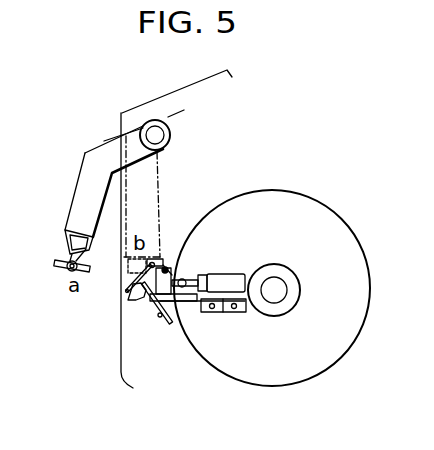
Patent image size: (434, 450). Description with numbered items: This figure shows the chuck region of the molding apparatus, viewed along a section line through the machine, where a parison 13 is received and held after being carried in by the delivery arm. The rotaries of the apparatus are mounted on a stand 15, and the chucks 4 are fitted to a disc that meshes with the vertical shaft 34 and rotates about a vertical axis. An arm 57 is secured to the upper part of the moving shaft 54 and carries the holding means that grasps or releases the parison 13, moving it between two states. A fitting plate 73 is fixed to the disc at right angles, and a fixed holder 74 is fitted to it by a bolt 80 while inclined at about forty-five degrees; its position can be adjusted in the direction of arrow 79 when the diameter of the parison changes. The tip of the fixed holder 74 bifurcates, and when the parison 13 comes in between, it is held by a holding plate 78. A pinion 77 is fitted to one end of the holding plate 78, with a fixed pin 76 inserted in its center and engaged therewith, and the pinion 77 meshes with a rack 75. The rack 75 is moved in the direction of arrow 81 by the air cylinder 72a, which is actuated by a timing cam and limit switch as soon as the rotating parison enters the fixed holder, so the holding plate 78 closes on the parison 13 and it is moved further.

The chuck 4 is at (230, 318).
The parison 13 is at (120, 313).
The stand 15 is at (166, 96).
The vertical shaft 34 is at (285, 289).
The moving shaft 54 is at (169, 135).
The arm 57 is at (76, 188).
The air cylinder 72a is at (238, 276).
The fitting plate 73 is at (237, 311).
The fixed holder 74 is at (131, 298).
The rack 75 is at (181, 292).
The fixed pin 76 is at (176, 268).
The pinion 77 is at (166, 265).
The holding plate 78 is at (129, 283).
The arrow 79 is at (141, 308).
The bolt 80 is at (153, 328).
The arrow 81 is at (180, 270).